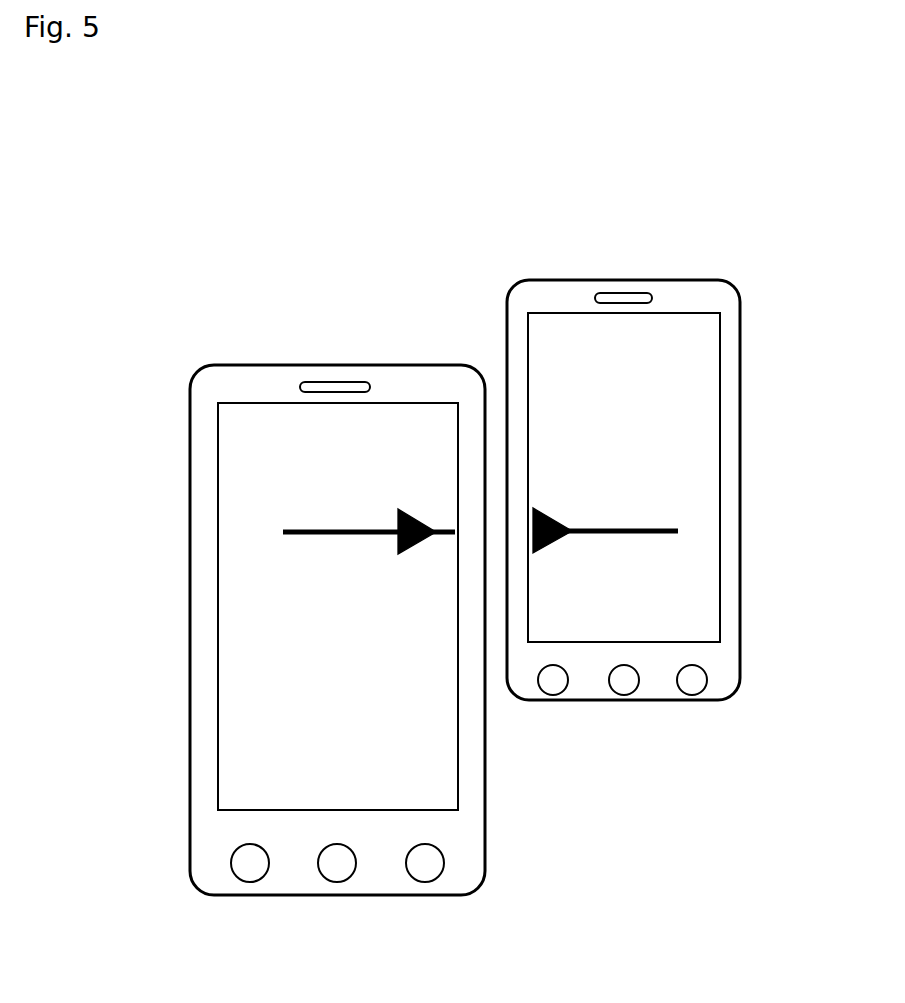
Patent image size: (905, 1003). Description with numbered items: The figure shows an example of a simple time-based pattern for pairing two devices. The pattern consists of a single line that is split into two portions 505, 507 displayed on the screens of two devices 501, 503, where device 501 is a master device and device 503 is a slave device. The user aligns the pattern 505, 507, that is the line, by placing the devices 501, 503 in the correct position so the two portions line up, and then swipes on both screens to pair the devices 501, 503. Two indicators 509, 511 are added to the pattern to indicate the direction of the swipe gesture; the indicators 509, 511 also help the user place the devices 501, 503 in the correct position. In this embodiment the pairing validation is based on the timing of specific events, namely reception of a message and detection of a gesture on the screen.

The master device 501 is at (382, 896).
The slave device 503 is at (668, 705).
The line split portion on first screen 505 is at (317, 528).
The line split portion on second screen 507 is at (625, 530).
The indicator on first screen 509 is at (420, 518).
The indicator on second screen 511 is at (545, 516).